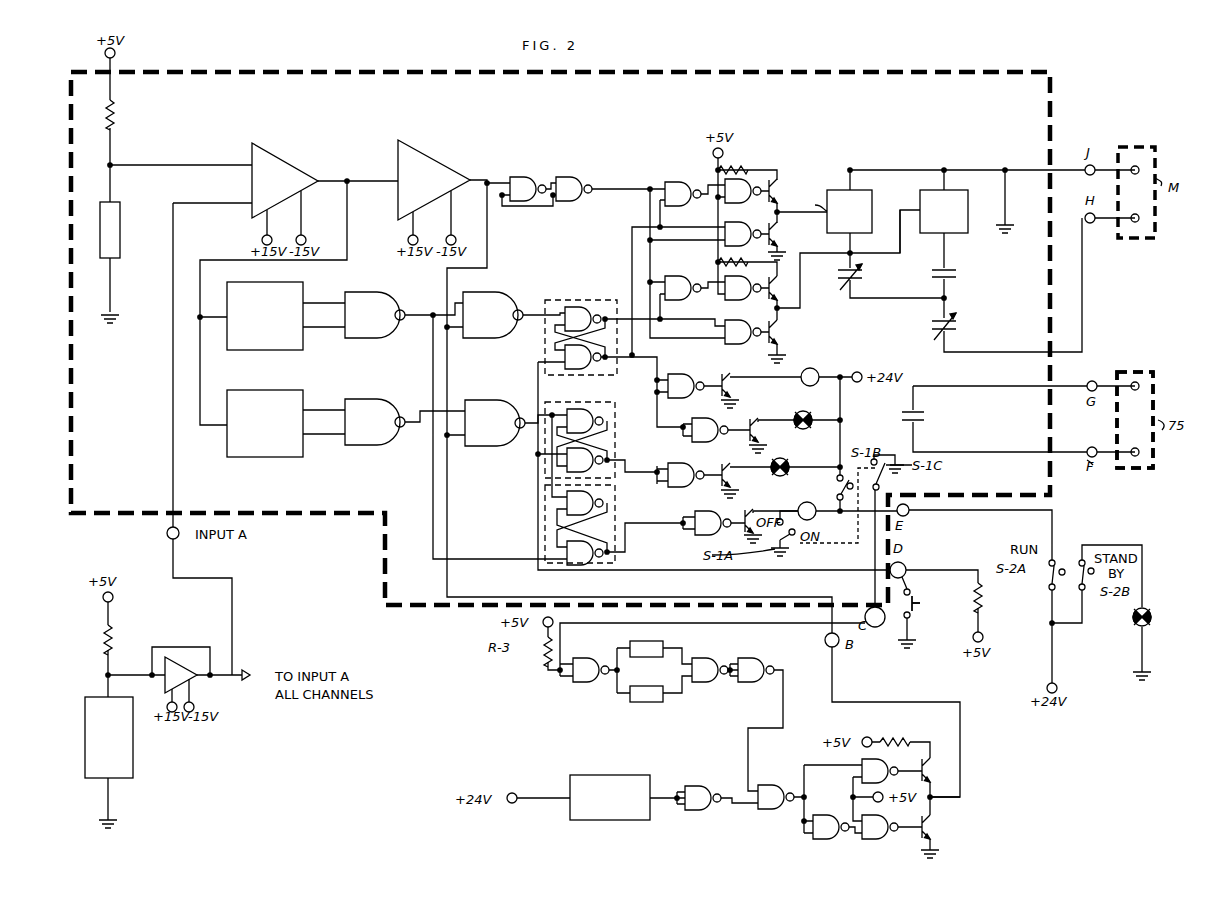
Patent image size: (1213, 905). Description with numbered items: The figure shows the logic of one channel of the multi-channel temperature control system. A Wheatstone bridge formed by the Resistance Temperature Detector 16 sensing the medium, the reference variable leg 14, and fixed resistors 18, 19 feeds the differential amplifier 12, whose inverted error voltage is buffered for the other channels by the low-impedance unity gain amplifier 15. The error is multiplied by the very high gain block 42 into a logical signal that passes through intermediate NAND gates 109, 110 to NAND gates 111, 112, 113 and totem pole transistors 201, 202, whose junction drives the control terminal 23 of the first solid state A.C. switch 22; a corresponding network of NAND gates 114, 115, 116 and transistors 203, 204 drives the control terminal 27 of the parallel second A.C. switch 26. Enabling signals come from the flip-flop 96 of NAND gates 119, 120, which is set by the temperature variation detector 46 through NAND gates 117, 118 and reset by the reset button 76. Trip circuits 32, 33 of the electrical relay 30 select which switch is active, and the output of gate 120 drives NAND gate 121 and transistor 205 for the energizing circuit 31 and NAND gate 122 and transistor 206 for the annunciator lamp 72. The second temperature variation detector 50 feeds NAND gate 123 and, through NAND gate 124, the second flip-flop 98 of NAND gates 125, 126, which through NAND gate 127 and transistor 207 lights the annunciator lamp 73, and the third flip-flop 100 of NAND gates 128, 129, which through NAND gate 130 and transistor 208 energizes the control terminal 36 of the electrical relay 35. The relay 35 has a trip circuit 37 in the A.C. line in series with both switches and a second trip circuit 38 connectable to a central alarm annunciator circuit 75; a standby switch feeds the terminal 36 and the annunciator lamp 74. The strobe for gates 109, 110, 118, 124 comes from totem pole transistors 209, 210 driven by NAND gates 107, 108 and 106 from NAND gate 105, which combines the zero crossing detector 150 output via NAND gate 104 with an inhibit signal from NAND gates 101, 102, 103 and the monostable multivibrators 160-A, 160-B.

The differential amplifier 12 is at (285, 180).
The second variable leg 14 is at (109, 737).
The unity gain amplifier 15 is at (181, 675).
The Resistance Temperature Detector 16 is at (120, 230).
The fixed resistor 18 is at (114, 112).
The fixed resistor 19 is at (102, 640).
The first solid state A.C. switch 22 is at (849, 211).
The control terminal 23 is at (810, 203).
The second solid state A.C. switch 26 is at (944, 211).
The control terminal 27 is at (901, 209).
The electrical relay 30 is at (862, 262).
The energizing circuit 31 is at (811, 377).
The trip circuit 32 is at (858, 283).
The trip circuit 33 is at (948, 270).
The electrical relay 35 is at (934, 322).
The control terminal 36 is at (808, 511).
The trip circuit 37 is at (950, 328).
The second trip circuit 38 is at (919, 423).
The signal converter means 42 is at (434, 180).
The temperature variation detector 46 is at (265, 316).
The second temperature variation detector 50 is at (265, 423).
The annunciator lamp 72 is at (806, 418).
The annunciator lamp 73 is at (786, 460).
The annunciator lamp 74 is at (1151, 617).
The central alarm annunciator circuit 75 is at (1135, 420).
The reset button 76 is at (915, 608).
The flip-flop 96 is at (588, 298).
The second flip-flop 98 is at (584, 400).
The third flip-flop 100 is at (617, 520).
The NAND gate 101 is at (591, 670).
The NAND gate 102 is at (710, 670).
The NAND gate 103 is at (756, 670).
The NAND gate 104 is at (703, 798).
The NAND gate 105 is at (776, 797).
The NAND gate 106 is at (831, 827).
The NAND gate 107 is at (880, 771).
The NAND gate 108 is at (880, 827).
The NAND gate 109 is at (528, 189).
The NAND gate 110 is at (574, 189).
The NAND gate 111 is at (683, 194).
The NAND gate 112 is at (743, 191).
The NAND gate 113 is at (743, 234).
The NAND gate 114 is at (683, 288).
The NAND gate 115 is at (743, 288).
The NAND gate 116 is at (743, 332).
The NAND gate 117 is at (375, 315).
The NAND gate 118 is at (493, 315).
The NAND gate 119 is at (583, 319).
The NAND gate 120 is at (583, 357).
The NAND gate 121 is at (686, 386).
The NAND gate 122 is at (710, 430).
The NAND gate 123 is at (375, 422).
The NAND gate 124 is at (495, 423).
The NAND gate 125 is at (585, 421).
The NAND gate 126 is at (585, 460).
The NAND gate 127 is at (686, 475).
The NAND gate 128 is at (585, 503).
The NAND gate 129 is at (585, 553).
The NAND gate 130 is at (713, 523).
The zero crossing detector 150 is at (610, 797).
The monostable multivibrator 160-A is at (649, 649).
The monostable multivibrator 160-B is at (650, 694).
The transistor 201 is at (780, 194).
The transistor 202 is at (783, 236).
The transistor 203 is at (783, 288).
The transistor 204 is at (782, 333).
The transistor 205 is at (734, 386).
The transistor 206 is at (742, 422).
The transistor 207 is at (731, 476).
The transistor 208 is at (752, 514).
The transistor 209 is at (934, 760).
The transistor 210 is at (928, 827).